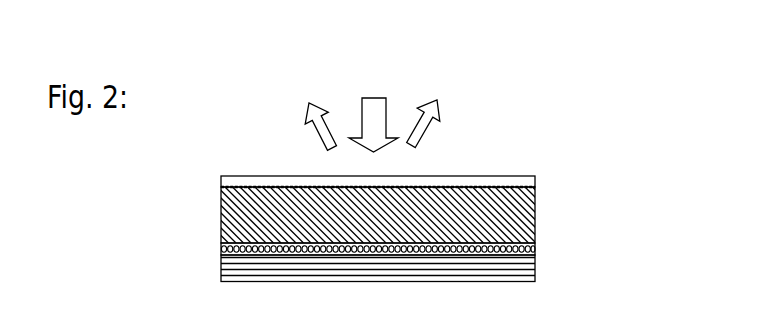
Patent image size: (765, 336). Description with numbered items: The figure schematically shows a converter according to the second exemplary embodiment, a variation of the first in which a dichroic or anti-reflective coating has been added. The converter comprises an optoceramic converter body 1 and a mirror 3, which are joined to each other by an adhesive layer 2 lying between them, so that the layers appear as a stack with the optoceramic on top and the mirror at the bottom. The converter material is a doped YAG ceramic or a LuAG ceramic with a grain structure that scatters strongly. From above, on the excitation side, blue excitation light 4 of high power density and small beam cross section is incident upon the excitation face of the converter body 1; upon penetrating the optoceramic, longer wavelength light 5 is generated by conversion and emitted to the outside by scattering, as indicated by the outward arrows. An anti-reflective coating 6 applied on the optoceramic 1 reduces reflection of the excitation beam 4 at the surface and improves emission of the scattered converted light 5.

The optoceramic converter body 1 is at (535, 213).
The adhesive layer 2 is at (221, 248).
The mirror 3 is at (535, 267).
The blue excitation light 4 is at (373, 97).
The longer wavelength light 5 is at (420, 140).
The anti-reflective coating 6 is at (535, 181).